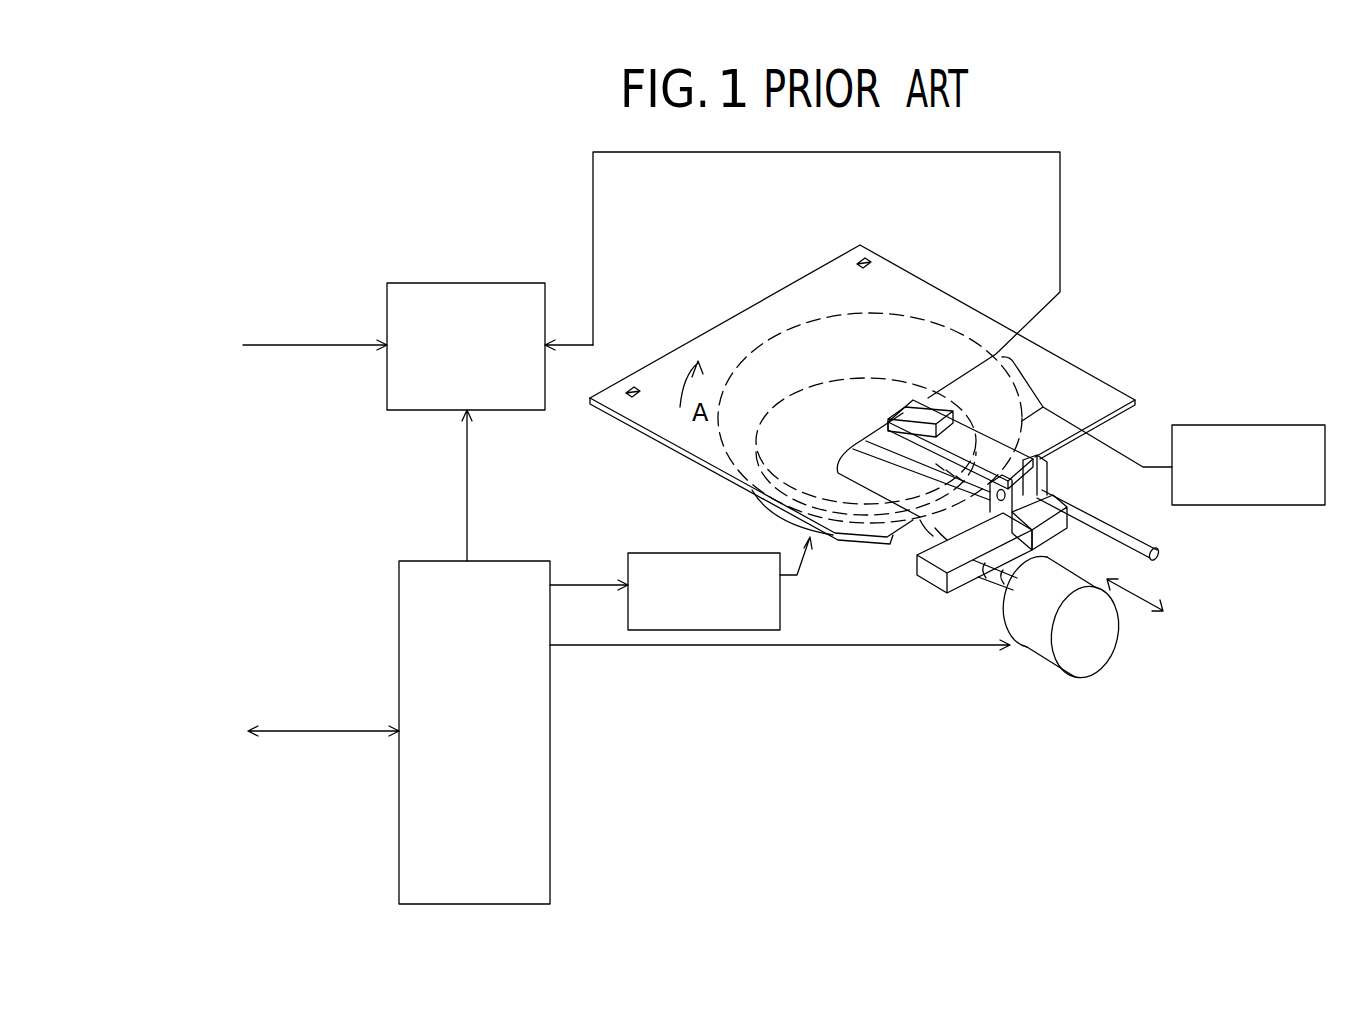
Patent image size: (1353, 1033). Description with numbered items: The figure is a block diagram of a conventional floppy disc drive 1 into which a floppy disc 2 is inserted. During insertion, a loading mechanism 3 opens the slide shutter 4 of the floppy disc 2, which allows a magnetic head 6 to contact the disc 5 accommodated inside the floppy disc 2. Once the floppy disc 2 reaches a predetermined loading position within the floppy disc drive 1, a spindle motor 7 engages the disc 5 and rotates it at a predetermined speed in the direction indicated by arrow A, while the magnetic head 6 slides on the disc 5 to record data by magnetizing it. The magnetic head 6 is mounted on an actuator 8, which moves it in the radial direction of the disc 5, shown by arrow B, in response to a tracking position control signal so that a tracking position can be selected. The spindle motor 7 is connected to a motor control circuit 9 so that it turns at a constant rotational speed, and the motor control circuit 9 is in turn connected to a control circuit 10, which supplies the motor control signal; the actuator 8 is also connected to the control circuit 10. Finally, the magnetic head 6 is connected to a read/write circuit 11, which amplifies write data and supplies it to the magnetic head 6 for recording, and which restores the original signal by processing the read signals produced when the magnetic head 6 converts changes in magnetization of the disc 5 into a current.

The floppy disc drive 1 is at (359, 191).
The floppy disc 2 is at (918, 300).
The loading mechanism 3 is at (1215, 425).
The slide shutter 4 is at (1014, 424).
The disc 5 is at (784, 330).
The magnetic head 6 is at (885, 418).
The spindle motor 7 is at (750, 497).
The actuator 8 is at (1040, 657).
The motor control circuit 9 is at (632, 553).
The control circuit 10 is at (550, 800).
The read/write circuit 11 is at (468, 283).